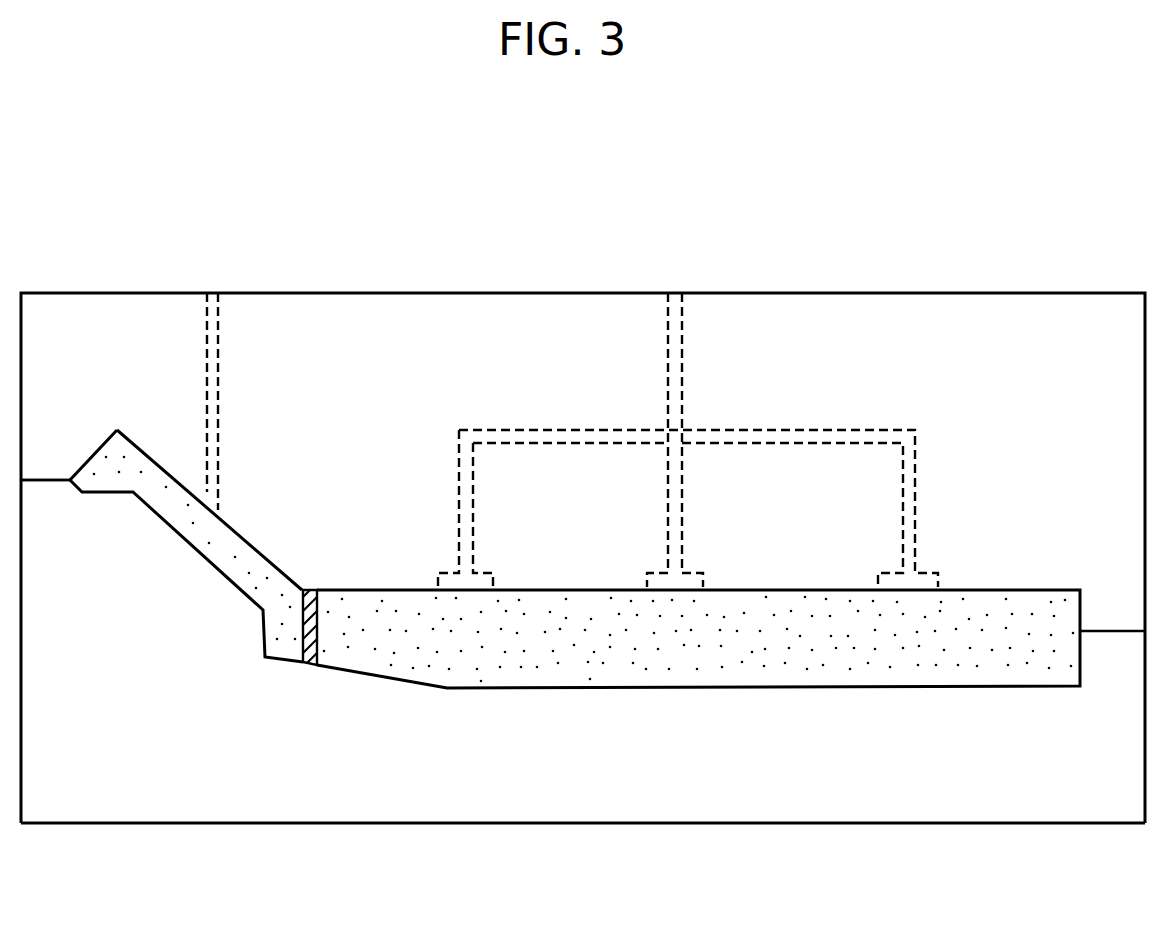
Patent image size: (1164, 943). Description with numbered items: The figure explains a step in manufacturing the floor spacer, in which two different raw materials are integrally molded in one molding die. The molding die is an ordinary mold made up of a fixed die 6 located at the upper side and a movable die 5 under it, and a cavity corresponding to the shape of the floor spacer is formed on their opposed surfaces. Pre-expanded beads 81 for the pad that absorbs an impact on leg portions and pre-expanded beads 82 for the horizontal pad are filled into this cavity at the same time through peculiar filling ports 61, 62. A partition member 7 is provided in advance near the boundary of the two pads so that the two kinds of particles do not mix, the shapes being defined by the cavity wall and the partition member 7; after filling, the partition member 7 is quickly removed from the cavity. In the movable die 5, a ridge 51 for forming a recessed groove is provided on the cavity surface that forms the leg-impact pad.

The movable die 5 is at (511, 812).
The fixed die 6 is at (1021, 300).
The partition member 7 is at (317, 650).
The ridge 51 is at (155, 533).
The filling port 61 is at (227, 503).
The filling port 62 is at (492, 577).
The pre-expanded beads 81 is at (105, 460).
The pre-expanded beads 82 is at (711, 665).